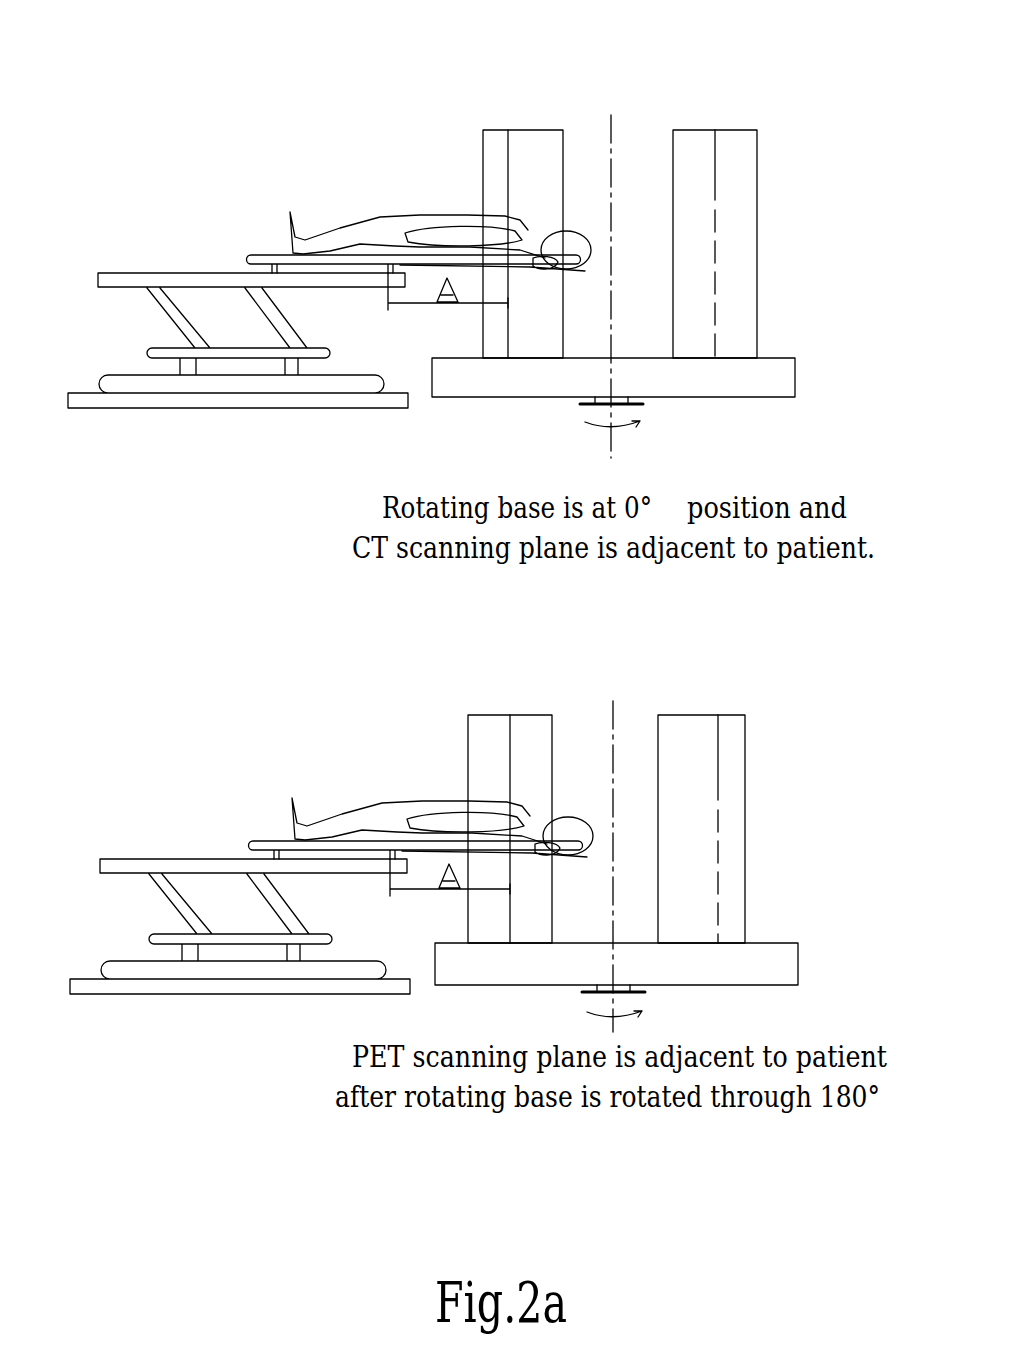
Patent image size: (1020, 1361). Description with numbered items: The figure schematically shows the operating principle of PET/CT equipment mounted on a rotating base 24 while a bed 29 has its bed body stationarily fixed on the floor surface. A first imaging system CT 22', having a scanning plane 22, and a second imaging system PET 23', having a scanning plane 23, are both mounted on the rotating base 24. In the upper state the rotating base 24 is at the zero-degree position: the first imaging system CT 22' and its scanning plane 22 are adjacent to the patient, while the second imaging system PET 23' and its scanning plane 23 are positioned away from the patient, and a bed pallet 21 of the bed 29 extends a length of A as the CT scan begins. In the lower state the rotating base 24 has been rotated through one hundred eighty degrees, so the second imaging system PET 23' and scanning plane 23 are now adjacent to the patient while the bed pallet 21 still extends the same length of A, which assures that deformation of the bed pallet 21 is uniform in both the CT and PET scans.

The bed pallet 21 is at (250, 258).
The scanning plane 22 is at (596, 536).
The first imaging system CT 22' is at (655, 482).
The scanning plane 23 is at (596, 536).
The second imaging system PET 23' is at (664, 478).
The rotating base 24 is at (796, 365).
The bed 29 is at (107, 260).